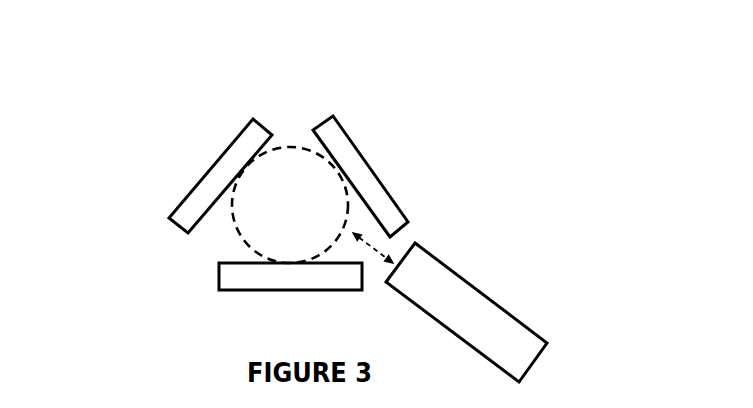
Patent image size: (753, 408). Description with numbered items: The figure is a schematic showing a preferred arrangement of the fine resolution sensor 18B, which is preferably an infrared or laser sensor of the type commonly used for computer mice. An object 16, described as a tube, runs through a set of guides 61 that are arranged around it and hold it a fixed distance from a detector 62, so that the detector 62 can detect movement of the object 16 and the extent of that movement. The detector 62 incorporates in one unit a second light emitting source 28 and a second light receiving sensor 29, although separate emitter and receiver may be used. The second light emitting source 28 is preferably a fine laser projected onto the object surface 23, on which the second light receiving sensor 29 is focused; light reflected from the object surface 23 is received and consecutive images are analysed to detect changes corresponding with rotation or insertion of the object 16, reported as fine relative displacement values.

The fine resolution sensor 18B is at (176, 118).
The object 16 is at (292, 145).
The object surface 23 is at (232, 218).
The guides 61 is at (375, 170).
The second light emitting source 28 is at (457, 264).
The second light receiving sensor 29 is at (373, 248).
The detector 62 is at (532, 367).